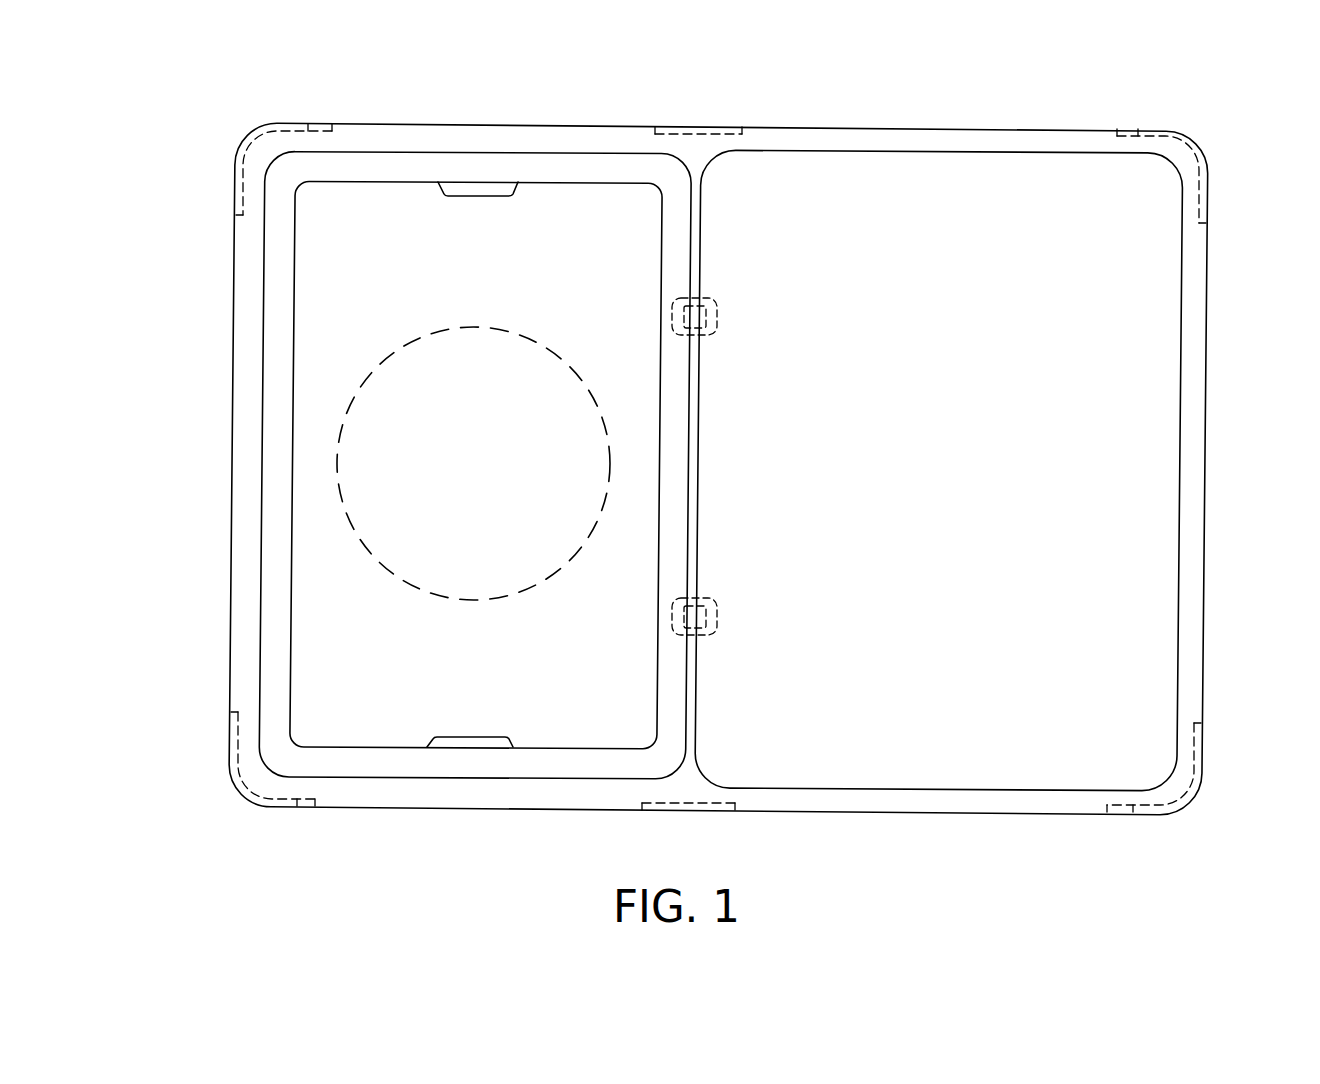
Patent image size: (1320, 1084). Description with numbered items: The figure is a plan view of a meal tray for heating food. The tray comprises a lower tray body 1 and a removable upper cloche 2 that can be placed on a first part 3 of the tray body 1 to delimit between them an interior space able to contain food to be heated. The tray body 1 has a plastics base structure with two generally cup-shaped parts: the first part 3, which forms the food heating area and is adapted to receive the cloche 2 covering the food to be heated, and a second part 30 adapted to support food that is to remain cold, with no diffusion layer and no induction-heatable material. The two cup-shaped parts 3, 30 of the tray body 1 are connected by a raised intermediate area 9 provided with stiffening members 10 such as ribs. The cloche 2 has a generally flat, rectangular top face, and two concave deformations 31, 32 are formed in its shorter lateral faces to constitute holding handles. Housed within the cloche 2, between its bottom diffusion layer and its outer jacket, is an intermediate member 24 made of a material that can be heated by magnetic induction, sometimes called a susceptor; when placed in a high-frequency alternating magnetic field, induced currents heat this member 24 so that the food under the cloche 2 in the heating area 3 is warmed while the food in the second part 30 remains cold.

The lower tray body 1 is at (818, 124).
The removable upper cloche 2 is at (610, 210).
The first part (food heating area) 3 is at (870, 175).
The raised intermediate area 9 is at (698, 393).
The stiffening members 10 is at (707, 595).
The intermediate member (susceptor) 24 is at (440, 597).
The second part (cold food area) 30 is at (1060, 170).
The concave deformation (holding handle) 31 is at (496, 745).
The concave deformation (holding handle) 32 is at (500, 187).